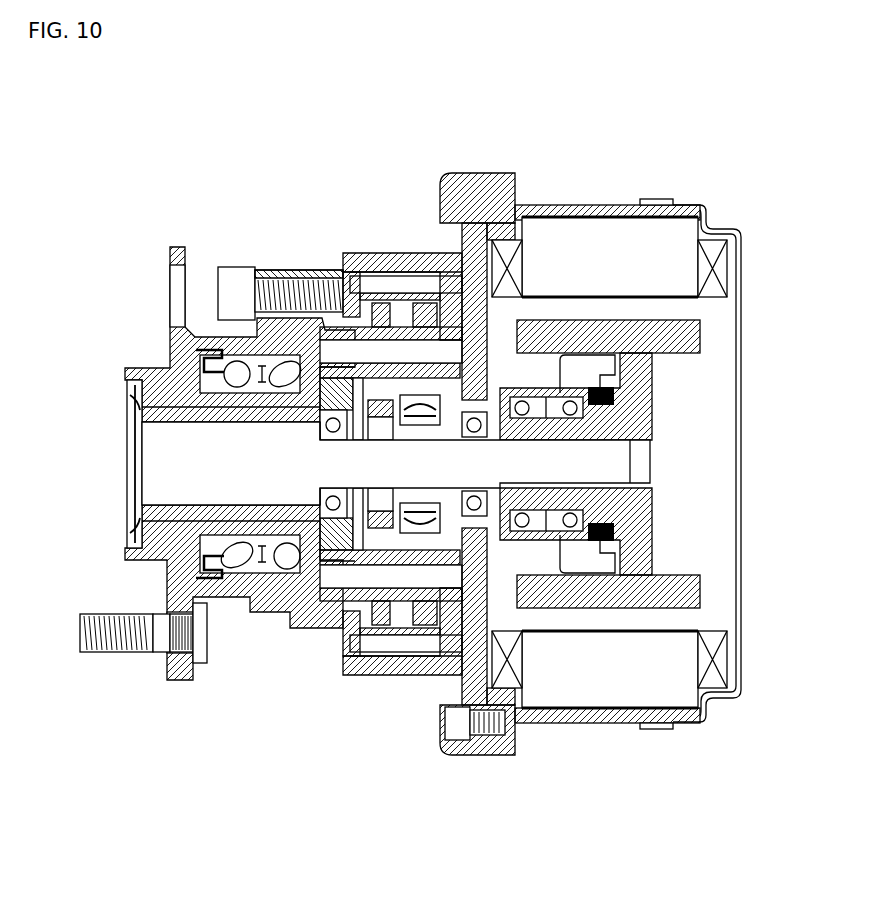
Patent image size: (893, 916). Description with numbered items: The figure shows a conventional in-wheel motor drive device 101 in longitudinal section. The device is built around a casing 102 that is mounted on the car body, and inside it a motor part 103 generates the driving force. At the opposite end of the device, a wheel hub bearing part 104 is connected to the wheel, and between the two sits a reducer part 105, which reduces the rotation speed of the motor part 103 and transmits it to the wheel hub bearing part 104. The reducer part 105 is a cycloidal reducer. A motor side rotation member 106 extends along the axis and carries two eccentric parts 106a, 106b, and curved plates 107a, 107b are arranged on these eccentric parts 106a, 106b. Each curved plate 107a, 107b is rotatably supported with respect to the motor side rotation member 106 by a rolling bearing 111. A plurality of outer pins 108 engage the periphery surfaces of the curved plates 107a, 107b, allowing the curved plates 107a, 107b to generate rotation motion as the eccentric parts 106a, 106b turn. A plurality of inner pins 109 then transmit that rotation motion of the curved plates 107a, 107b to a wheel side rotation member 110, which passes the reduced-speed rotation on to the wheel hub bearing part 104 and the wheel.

The in-wheel motor drive device 101 is at (233, 136).
The casing 102 is at (472, 162).
The motor part 103 is at (750, 870).
The wheel hub bearing part 104 is at (293, 870).
The reducer part 105 is at (413, 870).
The motor side rotation member 106 is at (592, 462).
The eccentric part 106a is at (417, 430).
The eccentric part 106b is at (383, 500).
The curved plate 107a is at (425, 673).
The curved plate 107b is at (343, 253).
The outer pins 108 is at (427, 284).
The inner pins 109 is at (390, 350).
The wheel side rotation member 110 is at (142, 415).
The rolling bearing 111 is at (443, 400).